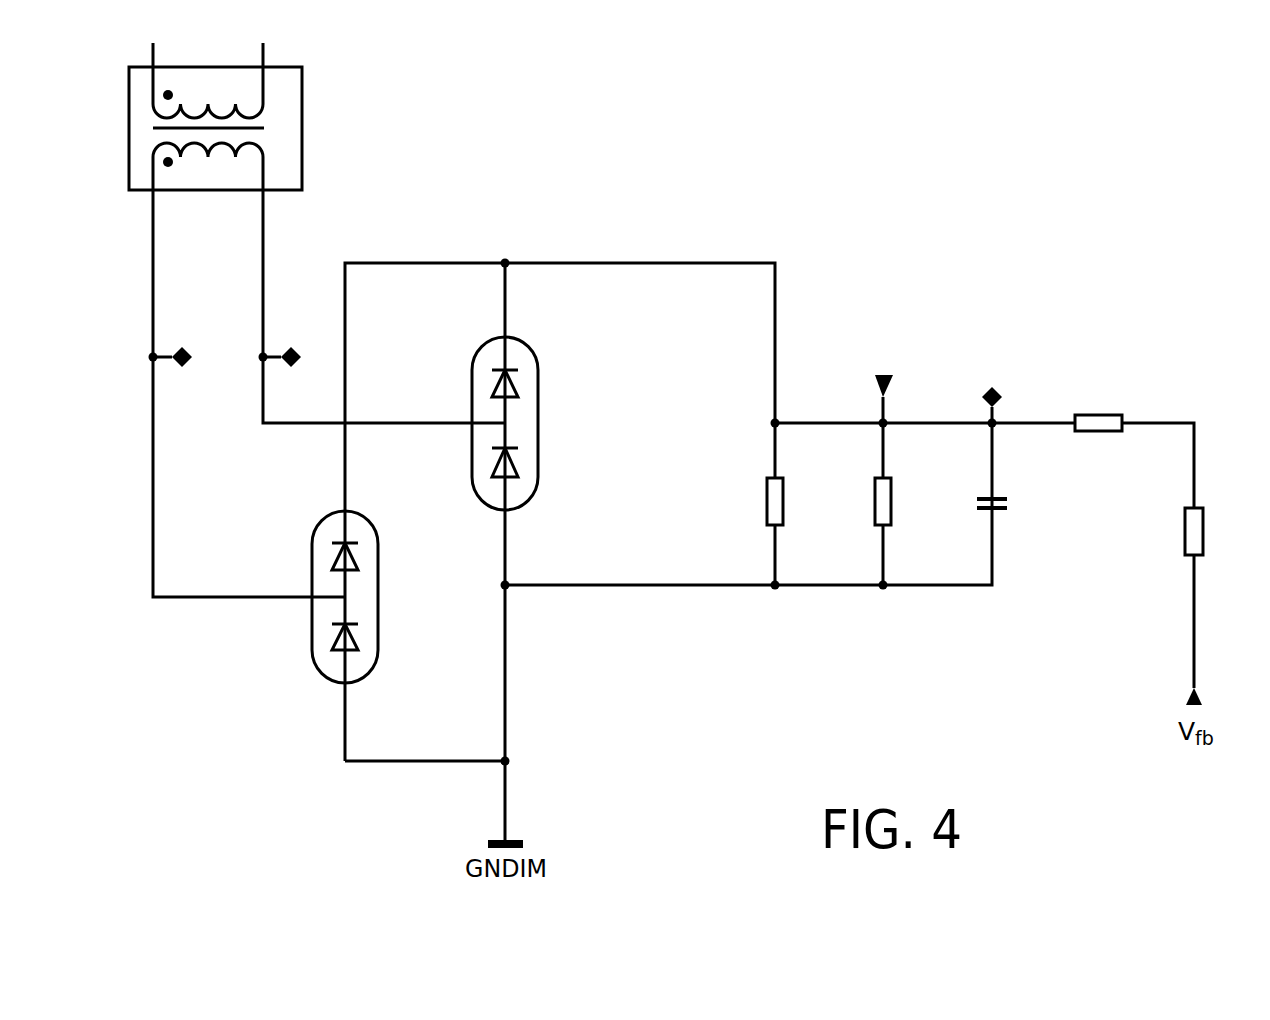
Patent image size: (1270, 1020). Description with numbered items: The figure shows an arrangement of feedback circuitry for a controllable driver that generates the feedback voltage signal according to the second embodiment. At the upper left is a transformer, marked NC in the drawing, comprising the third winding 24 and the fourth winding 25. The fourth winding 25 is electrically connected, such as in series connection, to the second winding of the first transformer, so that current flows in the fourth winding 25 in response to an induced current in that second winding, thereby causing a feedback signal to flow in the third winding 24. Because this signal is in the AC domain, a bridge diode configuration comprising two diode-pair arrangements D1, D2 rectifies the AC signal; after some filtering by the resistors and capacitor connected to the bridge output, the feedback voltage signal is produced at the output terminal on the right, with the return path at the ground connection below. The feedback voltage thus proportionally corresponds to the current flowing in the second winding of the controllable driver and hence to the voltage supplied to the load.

The third winding 24 is at (263, 167).
The fourth winding 25 is at (263, 90).
The diode-pair arrangement D1 is at (527, 423).
The diode-pair arrangement D2 is at (367, 597).
The transformer (not connected) NC is at (215, 128).